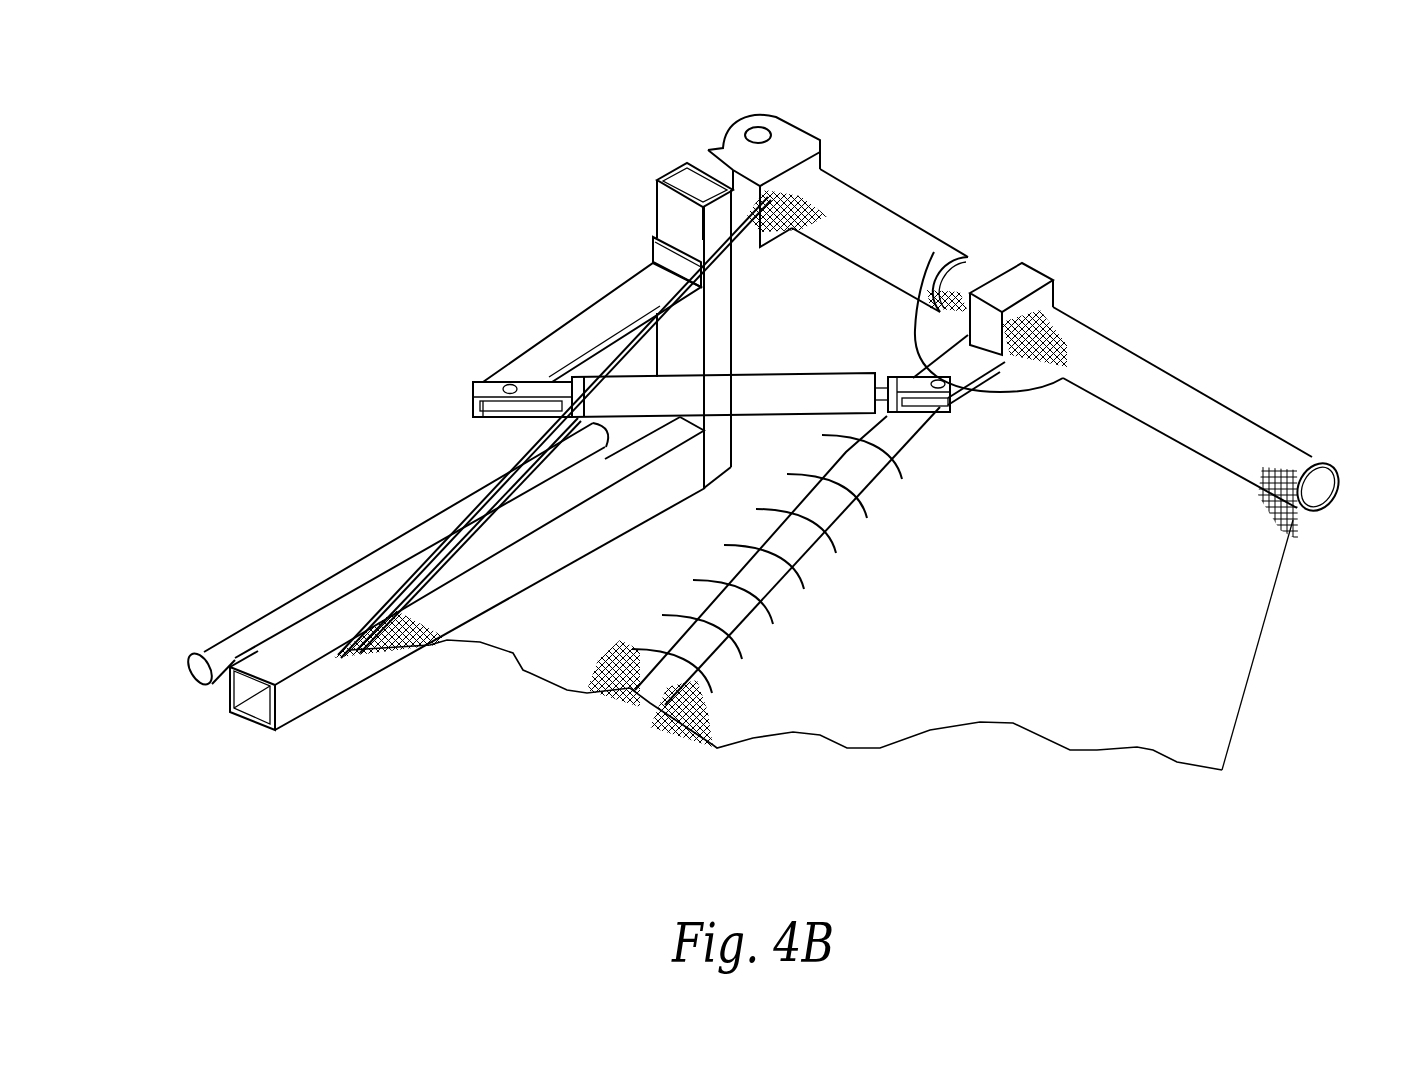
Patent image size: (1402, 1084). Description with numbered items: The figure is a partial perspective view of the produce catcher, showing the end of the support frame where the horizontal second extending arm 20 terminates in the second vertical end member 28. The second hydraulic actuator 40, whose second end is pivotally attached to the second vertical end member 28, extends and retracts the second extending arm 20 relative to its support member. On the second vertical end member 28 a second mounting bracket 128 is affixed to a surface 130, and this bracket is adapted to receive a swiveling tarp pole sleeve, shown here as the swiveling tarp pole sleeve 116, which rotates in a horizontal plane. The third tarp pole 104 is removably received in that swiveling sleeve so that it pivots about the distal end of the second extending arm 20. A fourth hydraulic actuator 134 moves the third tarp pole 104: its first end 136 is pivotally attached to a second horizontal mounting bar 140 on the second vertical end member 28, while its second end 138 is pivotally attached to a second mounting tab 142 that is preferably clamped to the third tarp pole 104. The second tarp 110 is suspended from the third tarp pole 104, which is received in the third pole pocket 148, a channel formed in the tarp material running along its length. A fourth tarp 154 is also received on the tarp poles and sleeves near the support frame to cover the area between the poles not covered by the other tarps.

The second extending arm 20 is at (327, 687).
The second vertical end member 28 is at (673, 215).
The second hydraulic actuator 40 is at (243, 640).
The third tarp pole 104 is at (1313, 465).
The second tarp 110 is at (923, 707).
The first swiveling tarp pole sleeve 116 is at (868, 215).
The second mounting bracket 128 is at (712, 160).
The surface 130 is at (750, 300).
The fourth hydraulic actuator 134 is at (618, 392).
The first end 136 is at (478, 420).
The second end 138 is at (934, 252).
The second horizontal mounting bar 140 is at (607, 308).
The second mounting tab 142 is at (1065, 372).
The third pole pocket 148 is at (1298, 513).
The fourth tarp 154 is at (519, 663).